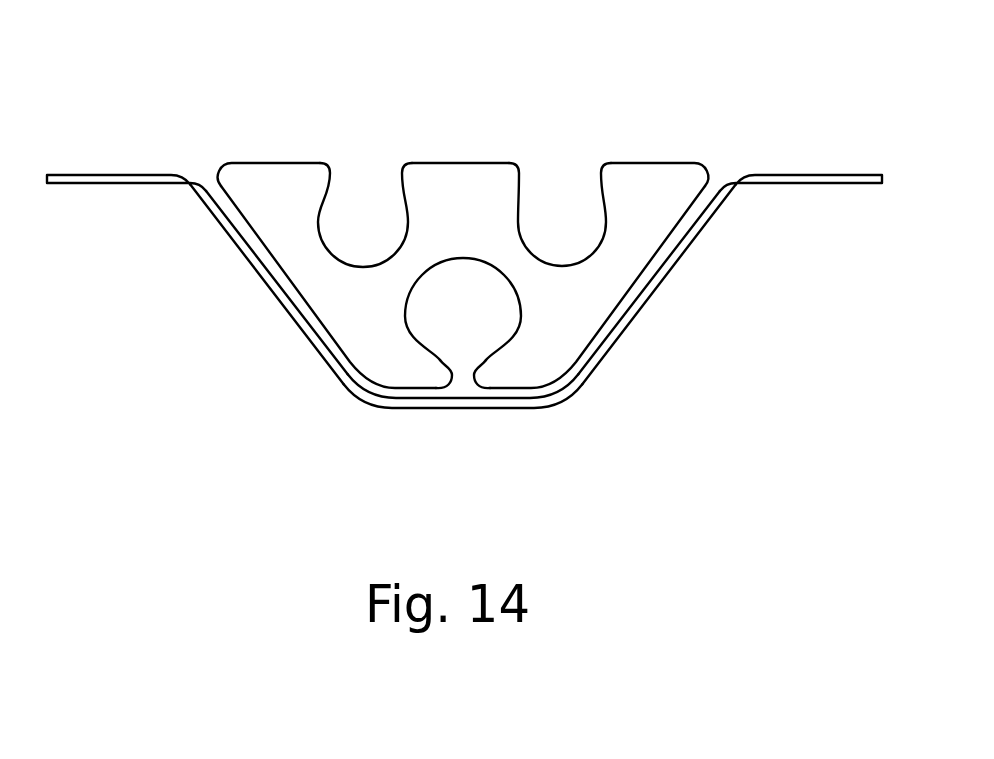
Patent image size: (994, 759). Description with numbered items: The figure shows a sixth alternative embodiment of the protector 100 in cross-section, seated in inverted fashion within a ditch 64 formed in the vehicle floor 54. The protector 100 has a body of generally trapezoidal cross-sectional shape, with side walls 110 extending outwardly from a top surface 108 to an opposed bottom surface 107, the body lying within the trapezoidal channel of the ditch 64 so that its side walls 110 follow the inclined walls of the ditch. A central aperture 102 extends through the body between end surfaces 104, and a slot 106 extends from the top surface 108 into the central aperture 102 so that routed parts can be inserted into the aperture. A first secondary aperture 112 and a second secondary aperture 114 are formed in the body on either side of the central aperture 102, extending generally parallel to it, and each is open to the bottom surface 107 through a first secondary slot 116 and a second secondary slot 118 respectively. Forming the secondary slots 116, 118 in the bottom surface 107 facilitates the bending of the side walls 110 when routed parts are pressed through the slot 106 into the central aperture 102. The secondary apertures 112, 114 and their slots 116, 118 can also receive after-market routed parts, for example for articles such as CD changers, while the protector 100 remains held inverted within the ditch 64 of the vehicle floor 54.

The vehicle floor 54 is at (73, 175).
The ditch 64 is at (348, 390).
The protector 100 is at (439, 259).
The central aperture 102 is at (484, 327).
The end surfaces 104 is at (337, 307).
The slot 106 is at (452, 375).
The bottom surface 107 is at (499, 163).
The top surface 108 is at (520, 380).
The side walls 110 is at (298, 292).
The first secondary aperture 112 is at (387, 233).
The second secondary aperture 114 is at (591, 232).
The first secondary slot 116 is at (333, 169).
The second secondary slot 118 is at (601, 167).